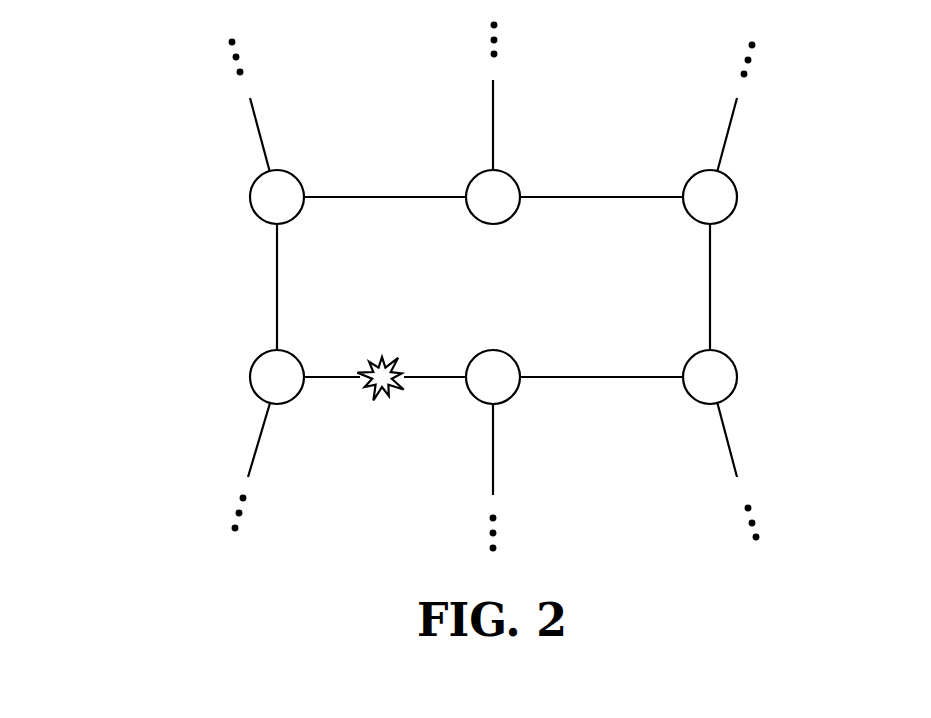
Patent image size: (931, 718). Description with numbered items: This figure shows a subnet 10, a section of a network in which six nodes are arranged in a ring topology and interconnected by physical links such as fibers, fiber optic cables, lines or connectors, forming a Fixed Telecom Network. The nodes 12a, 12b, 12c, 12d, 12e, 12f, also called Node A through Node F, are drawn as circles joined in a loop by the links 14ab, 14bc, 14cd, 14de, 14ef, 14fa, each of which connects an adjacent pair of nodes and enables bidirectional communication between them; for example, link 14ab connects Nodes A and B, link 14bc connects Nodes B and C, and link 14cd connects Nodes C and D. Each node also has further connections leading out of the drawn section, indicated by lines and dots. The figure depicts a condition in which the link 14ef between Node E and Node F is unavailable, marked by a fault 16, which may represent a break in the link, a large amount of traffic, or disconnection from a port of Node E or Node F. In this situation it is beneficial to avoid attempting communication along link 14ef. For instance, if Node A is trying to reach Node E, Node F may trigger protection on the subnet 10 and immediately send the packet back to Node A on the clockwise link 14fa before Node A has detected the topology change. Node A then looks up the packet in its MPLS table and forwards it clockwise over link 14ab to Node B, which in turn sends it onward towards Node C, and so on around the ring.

The subnet 10 is at (176, 256).
The node 12a is at (250, 183).
The node 12b is at (518, 180).
The node 12c is at (733, 213).
The node 12d is at (740, 370).
The node 12e is at (515, 395).
The node 12f is at (295, 400).
The link 14ab is at (366, 197).
The link 14bc is at (580, 197).
The link 14cd is at (708, 295).
The link 14de is at (628, 377).
The link 14ef is at (430, 377).
The link 14fa is at (278, 303).
The fault 16 is at (370, 400).